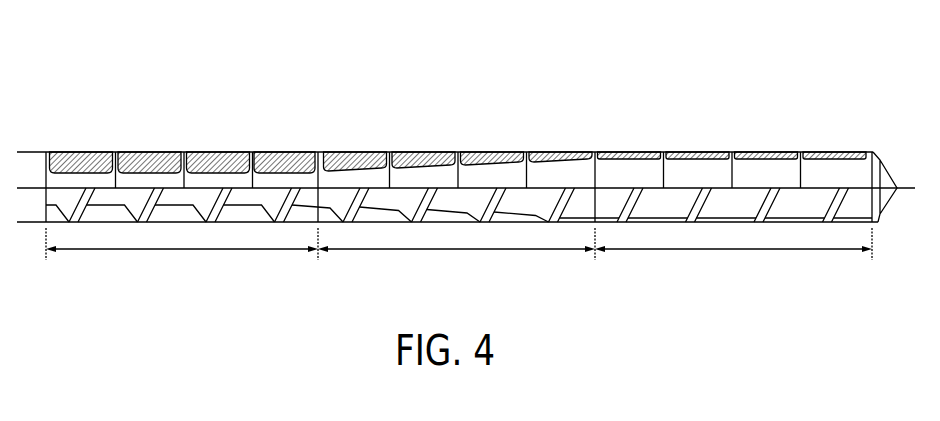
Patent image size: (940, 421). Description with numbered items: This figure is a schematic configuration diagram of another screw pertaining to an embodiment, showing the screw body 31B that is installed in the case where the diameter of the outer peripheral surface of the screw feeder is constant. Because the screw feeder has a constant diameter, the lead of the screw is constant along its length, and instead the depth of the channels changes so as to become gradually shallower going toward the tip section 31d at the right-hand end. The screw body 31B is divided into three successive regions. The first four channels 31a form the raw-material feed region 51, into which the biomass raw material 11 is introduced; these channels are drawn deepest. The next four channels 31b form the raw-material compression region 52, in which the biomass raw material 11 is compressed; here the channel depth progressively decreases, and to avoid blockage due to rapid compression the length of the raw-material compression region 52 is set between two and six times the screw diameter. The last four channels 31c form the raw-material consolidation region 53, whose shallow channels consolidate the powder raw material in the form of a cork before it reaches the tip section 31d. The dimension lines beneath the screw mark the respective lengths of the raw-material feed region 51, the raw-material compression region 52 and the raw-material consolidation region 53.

The screw body 31B is at (488, 108).
The channels 31a is at (150, 155).
The biomass raw material 11 is at (287, 158).
The channels 31b is at (366, 156).
The channels 31c is at (633, 155).
The tip section 31d is at (893, 170).
The raw-material feed region 51 is at (182, 253).
The raw-material compression region 52 is at (456, 253).
The raw-material consolidation region 53 is at (733, 253).